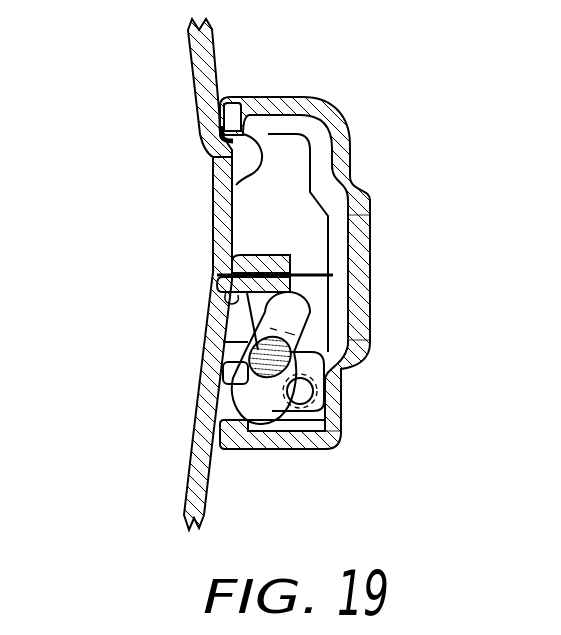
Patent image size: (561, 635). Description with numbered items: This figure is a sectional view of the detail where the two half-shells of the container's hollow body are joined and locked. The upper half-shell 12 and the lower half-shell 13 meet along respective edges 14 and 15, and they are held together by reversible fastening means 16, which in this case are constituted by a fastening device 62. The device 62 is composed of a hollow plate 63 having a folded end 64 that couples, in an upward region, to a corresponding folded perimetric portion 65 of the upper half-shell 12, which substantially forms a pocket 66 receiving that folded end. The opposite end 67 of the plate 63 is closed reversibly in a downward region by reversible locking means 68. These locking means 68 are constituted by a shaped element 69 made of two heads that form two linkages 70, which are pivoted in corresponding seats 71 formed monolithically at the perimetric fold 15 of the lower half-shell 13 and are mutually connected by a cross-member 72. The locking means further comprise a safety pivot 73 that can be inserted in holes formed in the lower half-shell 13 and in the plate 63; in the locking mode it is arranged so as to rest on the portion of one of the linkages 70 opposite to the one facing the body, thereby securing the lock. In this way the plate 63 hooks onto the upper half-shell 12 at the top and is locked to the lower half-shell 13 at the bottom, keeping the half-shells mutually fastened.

The upper half-shell 12 is at (202, 42).
The lower half-shell 13 is at (188, 497).
The edge 14 is at (258, 260).
The edge 15 is at (240, 300).
The reversible fastening means 16 is at (374, 106).
The fastening device 62 is at (304, 425).
The hollow plate 63 is at (371, 234).
The folded end 64 is at (232, 112).
The folded perimetric portion 65 is at (215, 169).
The pocket 66 is at (222, 126).
The opposite end 67 is at (277, 445).
The reversible locking means 68 is at (222, 392).
The shaped element 69 is at (337, 365).
The linkages 70 is at (245, 349).
The seats 71 is at (310, 312).
The cross-member 72 is at (252, 422).
The safety pivot 73 is at (332, 400).